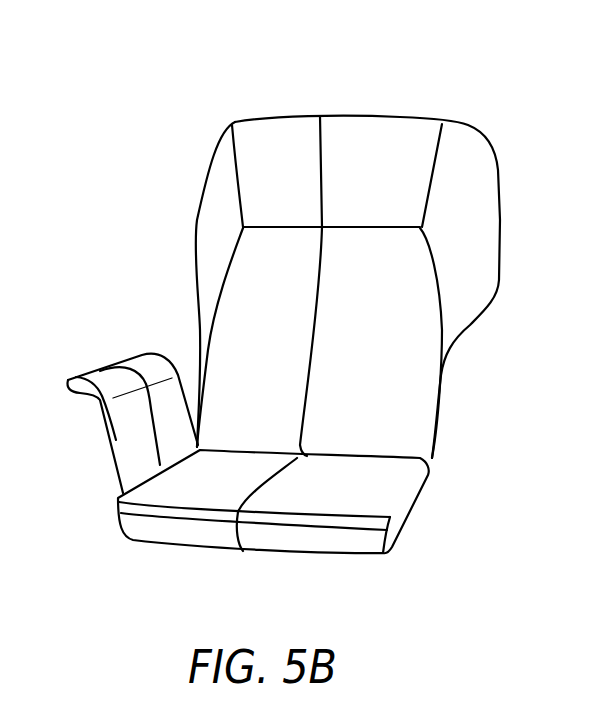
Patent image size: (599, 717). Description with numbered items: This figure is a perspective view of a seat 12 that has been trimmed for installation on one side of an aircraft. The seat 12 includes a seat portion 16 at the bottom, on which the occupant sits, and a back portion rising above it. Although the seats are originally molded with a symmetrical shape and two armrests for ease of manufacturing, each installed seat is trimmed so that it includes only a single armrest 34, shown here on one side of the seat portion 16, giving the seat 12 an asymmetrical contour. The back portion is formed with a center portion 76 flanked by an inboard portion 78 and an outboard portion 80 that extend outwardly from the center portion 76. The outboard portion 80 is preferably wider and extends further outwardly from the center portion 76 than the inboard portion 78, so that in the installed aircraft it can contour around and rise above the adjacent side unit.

The seat 12 is at (298, 298).
The seat portion 16 is at (188, 495).
The armrest 34 is at (107, 377).
The center portion 76 is at (383, 143).
The inboard portion 78 is at (220, 190).
The outboard portion 80 is at (458, 198).